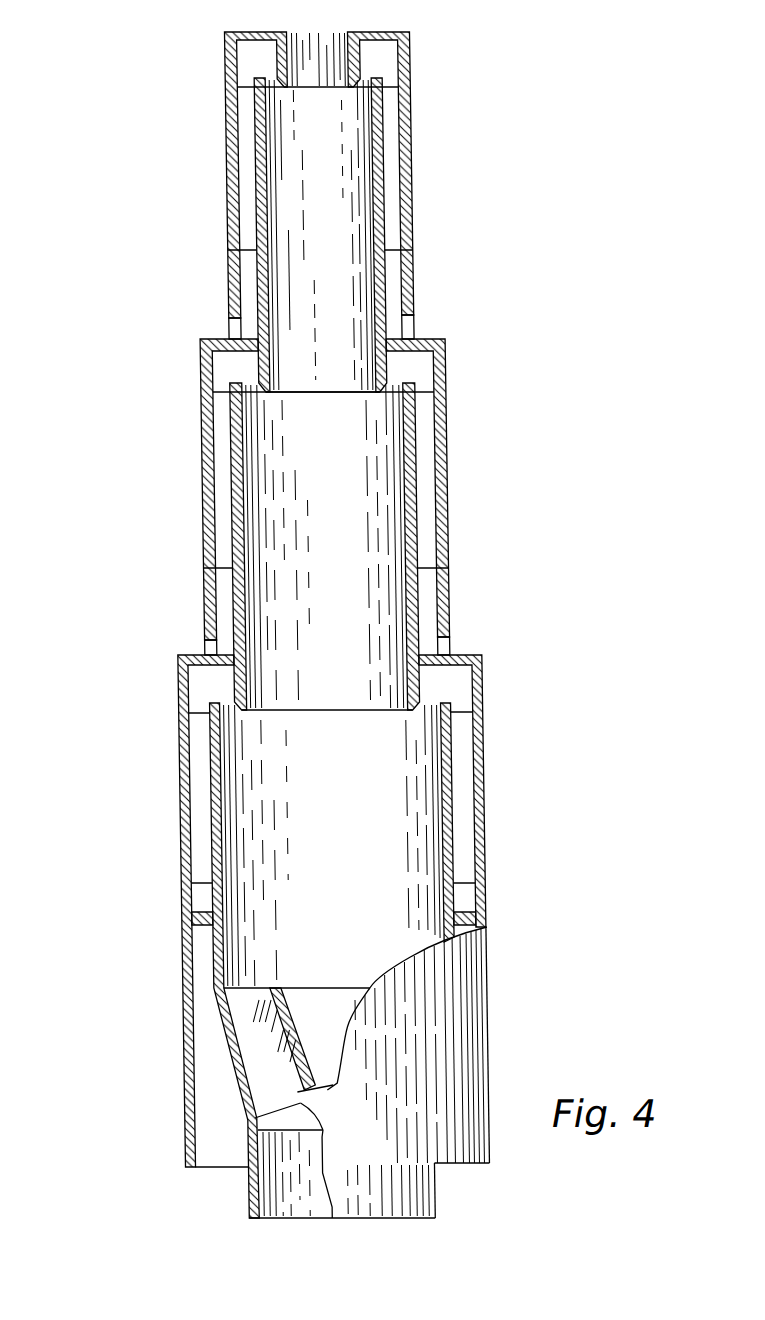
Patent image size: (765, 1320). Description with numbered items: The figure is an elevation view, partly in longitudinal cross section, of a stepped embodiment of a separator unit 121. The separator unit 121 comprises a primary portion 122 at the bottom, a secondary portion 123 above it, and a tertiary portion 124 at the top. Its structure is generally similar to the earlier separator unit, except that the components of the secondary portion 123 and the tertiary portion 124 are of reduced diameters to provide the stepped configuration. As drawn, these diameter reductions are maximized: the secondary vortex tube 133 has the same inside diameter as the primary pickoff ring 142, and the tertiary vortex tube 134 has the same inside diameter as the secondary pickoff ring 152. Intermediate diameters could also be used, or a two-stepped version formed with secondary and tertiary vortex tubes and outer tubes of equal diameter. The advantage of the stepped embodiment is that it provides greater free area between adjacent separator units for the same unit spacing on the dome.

The separator unit 121 is at (327, 617).
The primary portion 122 is at (402, 936).
The secondary portion 123 is at (397, 497).
The tertiary portion 124 is at (394, 178).
The secondary vortex tube 133 is at (412, 504).
The tertiary vortex tube 134 is at (378, 146).
The primary pickoff ring 142 is at (199, 684).
The secondary pickoff ring 152 is at (234, 369).